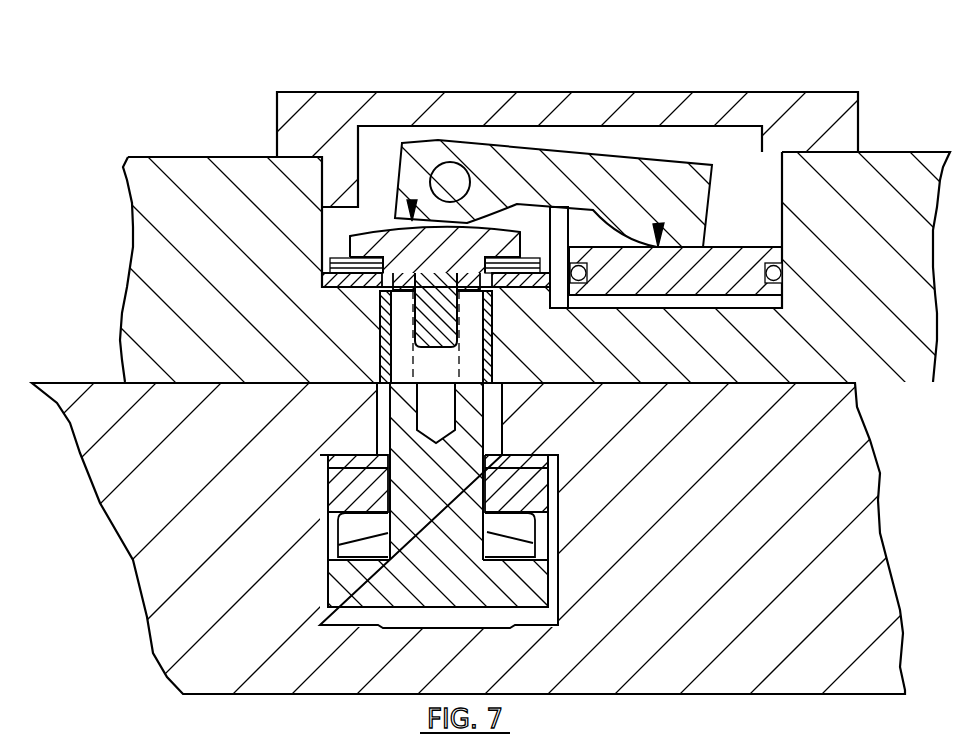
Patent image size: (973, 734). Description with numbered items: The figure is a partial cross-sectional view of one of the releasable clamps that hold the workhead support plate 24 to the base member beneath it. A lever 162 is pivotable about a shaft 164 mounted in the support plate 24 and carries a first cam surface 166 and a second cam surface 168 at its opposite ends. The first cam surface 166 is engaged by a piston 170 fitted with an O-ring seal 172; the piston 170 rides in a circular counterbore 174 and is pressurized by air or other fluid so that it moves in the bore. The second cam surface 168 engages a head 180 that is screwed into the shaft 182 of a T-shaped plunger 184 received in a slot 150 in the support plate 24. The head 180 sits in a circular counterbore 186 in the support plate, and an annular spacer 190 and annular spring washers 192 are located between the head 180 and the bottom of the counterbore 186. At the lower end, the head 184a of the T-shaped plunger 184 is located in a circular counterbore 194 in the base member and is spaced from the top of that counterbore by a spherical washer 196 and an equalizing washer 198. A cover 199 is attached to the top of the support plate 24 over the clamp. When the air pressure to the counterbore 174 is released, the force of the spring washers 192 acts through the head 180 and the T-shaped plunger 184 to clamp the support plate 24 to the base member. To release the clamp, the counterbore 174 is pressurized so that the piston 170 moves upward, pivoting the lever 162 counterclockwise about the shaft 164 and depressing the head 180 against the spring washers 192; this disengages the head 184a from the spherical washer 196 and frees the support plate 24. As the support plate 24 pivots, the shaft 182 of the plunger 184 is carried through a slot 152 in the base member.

The workhead support plate 24 is at (175, 180).
The slot 150 is at (388, 314).
The slot 152 is at (500, 420).
The lever 162 is at (591, 367).
The shaft 164 is at (453, 178).
The first cam surface 166 is at (659, 223).
The second cam surface 168 is at (412, 200).
The piston 170 is at (539, 367).
The O-ring seal 172 is at (783, 266).
The circular counterbore 174 is at (775, 183).
The head 180 is at (454, 367).
The shaft 182 is at (408, 452).
The T-shaped plunger 184 is at (415, 367).
The head of the T-shaped plunger 184a is at (345, 587).
The circular counterbore 186 is at (330, 226).
The annular spacer 190 is at (322, 280).
The annular spring washers 192 is at (330, 263).
The circular counterbore 194 is at (514, 367).
The spherical washer 196 is at (340, 547).
The equalizing washer 198 is at (538, 480).
The cover 199 is at (285, 115).